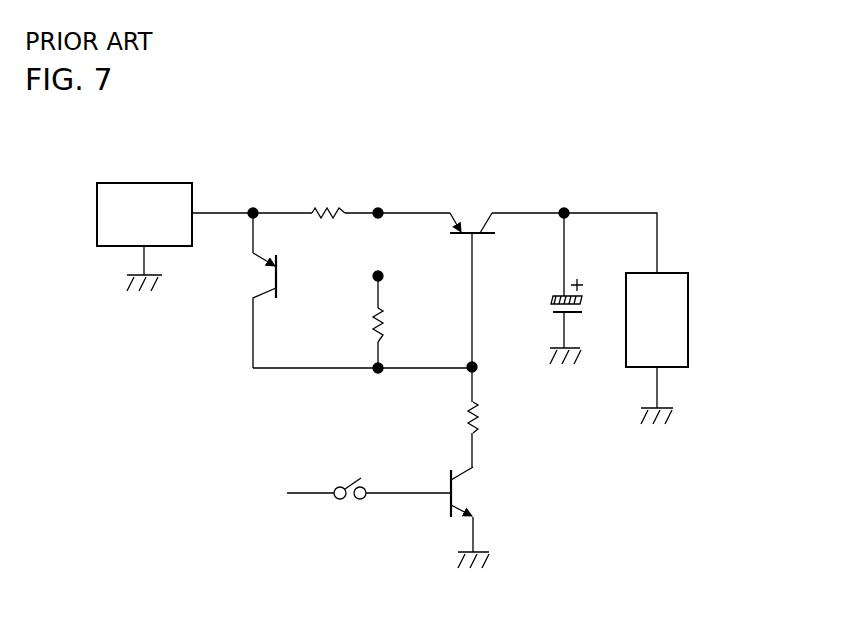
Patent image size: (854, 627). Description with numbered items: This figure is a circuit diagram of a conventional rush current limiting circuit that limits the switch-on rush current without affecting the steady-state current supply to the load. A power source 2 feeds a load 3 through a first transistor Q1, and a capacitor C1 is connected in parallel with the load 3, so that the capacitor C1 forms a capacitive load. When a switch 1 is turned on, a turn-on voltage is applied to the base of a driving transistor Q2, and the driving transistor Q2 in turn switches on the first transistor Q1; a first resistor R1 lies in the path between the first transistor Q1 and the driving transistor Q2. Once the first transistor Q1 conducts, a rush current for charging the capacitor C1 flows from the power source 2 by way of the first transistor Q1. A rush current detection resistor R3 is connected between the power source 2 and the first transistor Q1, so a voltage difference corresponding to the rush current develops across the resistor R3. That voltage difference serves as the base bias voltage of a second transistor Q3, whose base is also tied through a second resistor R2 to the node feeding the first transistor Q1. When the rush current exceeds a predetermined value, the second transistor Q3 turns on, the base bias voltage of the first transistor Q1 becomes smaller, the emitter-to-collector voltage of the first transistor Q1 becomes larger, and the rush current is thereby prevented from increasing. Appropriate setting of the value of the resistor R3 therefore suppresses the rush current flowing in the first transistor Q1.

The switch 1 is at (346, 480).
The power source 2 is at (157, 178).
The load 3 is at (674, 262).
The first transistor Q1 is at (472, 207).
The driving transistor Q2 is at (484, 517).
The second transistor Q3 is at (246, 290).
The first resistor R1 is at (494, 420).
The second resistor R2 is at (359, 325).
The rush current detection resistor R3 is at (328, 199).
The capacitor C1 is at (549, 291).